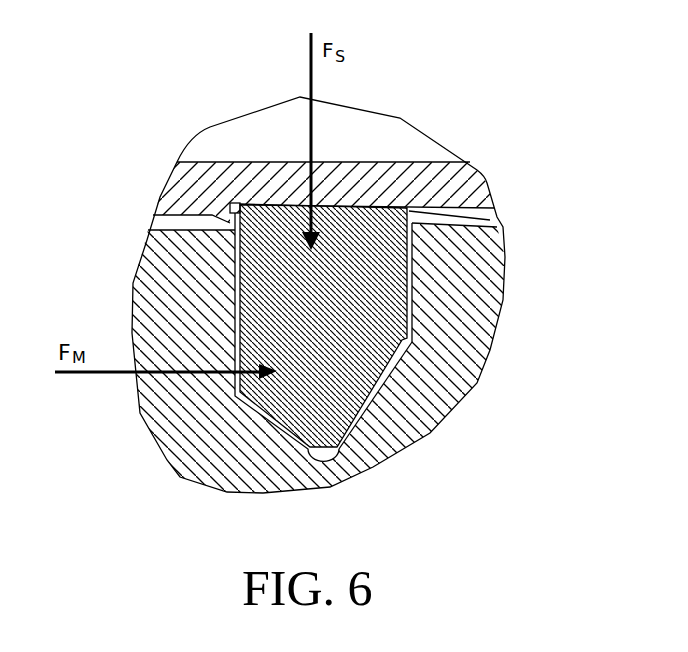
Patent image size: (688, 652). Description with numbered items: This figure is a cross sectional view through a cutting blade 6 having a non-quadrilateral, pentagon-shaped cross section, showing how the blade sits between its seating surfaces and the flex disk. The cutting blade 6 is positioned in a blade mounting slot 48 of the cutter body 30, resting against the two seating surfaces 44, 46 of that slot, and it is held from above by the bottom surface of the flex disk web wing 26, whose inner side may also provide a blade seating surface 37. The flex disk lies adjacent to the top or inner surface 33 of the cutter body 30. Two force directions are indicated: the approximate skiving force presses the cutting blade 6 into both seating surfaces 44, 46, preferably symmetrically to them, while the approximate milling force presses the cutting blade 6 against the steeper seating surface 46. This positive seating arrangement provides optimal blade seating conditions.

The cutting blade 6 is at (390, 268).
The web wing 26 is at (425, 192).
The cutter body 30 is at (157, 287).
The inner surface 33 is at (485, 241).
The blade seating surface 37 is at (263, 198).
The seating surface 44 is at (262, 405).
The seating surface 46 is at (370, 395).
The blade mounting slot 48 is at (423, 317).